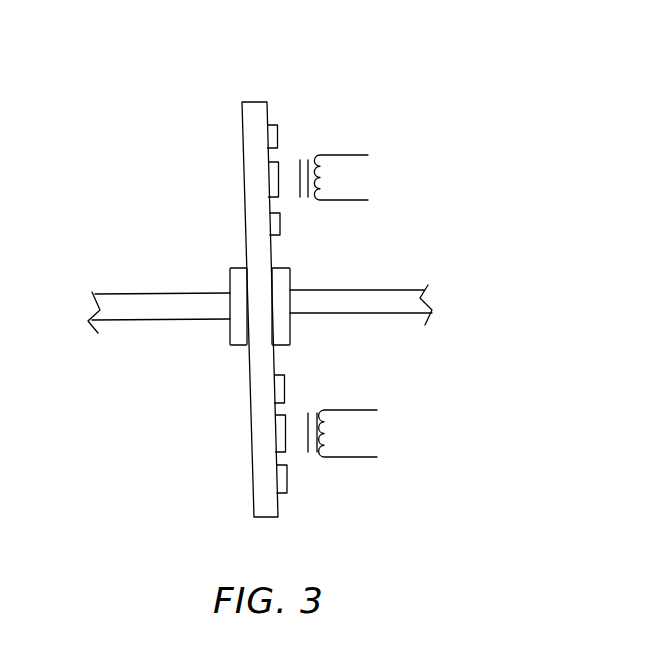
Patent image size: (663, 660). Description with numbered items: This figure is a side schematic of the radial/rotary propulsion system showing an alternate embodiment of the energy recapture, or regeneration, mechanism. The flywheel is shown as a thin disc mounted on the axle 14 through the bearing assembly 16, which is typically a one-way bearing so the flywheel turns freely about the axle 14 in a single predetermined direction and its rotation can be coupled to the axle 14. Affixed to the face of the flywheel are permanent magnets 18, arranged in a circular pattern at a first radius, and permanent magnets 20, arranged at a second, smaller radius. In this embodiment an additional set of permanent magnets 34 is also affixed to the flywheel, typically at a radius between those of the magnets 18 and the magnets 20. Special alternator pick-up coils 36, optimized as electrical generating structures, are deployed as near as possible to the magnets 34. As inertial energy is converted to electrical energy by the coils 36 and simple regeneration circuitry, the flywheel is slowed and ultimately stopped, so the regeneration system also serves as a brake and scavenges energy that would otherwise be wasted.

The axle 14 is at (122, 322).
The bearing assembly 16 is at (233, 337).
The permanent magnets 18 is at (278, 127).
The permanent magnets 20 is at (270, 212).
The permanent magnets 34 is at (280, 163).
The alternator pick-up coils 36 is at (389, 177).